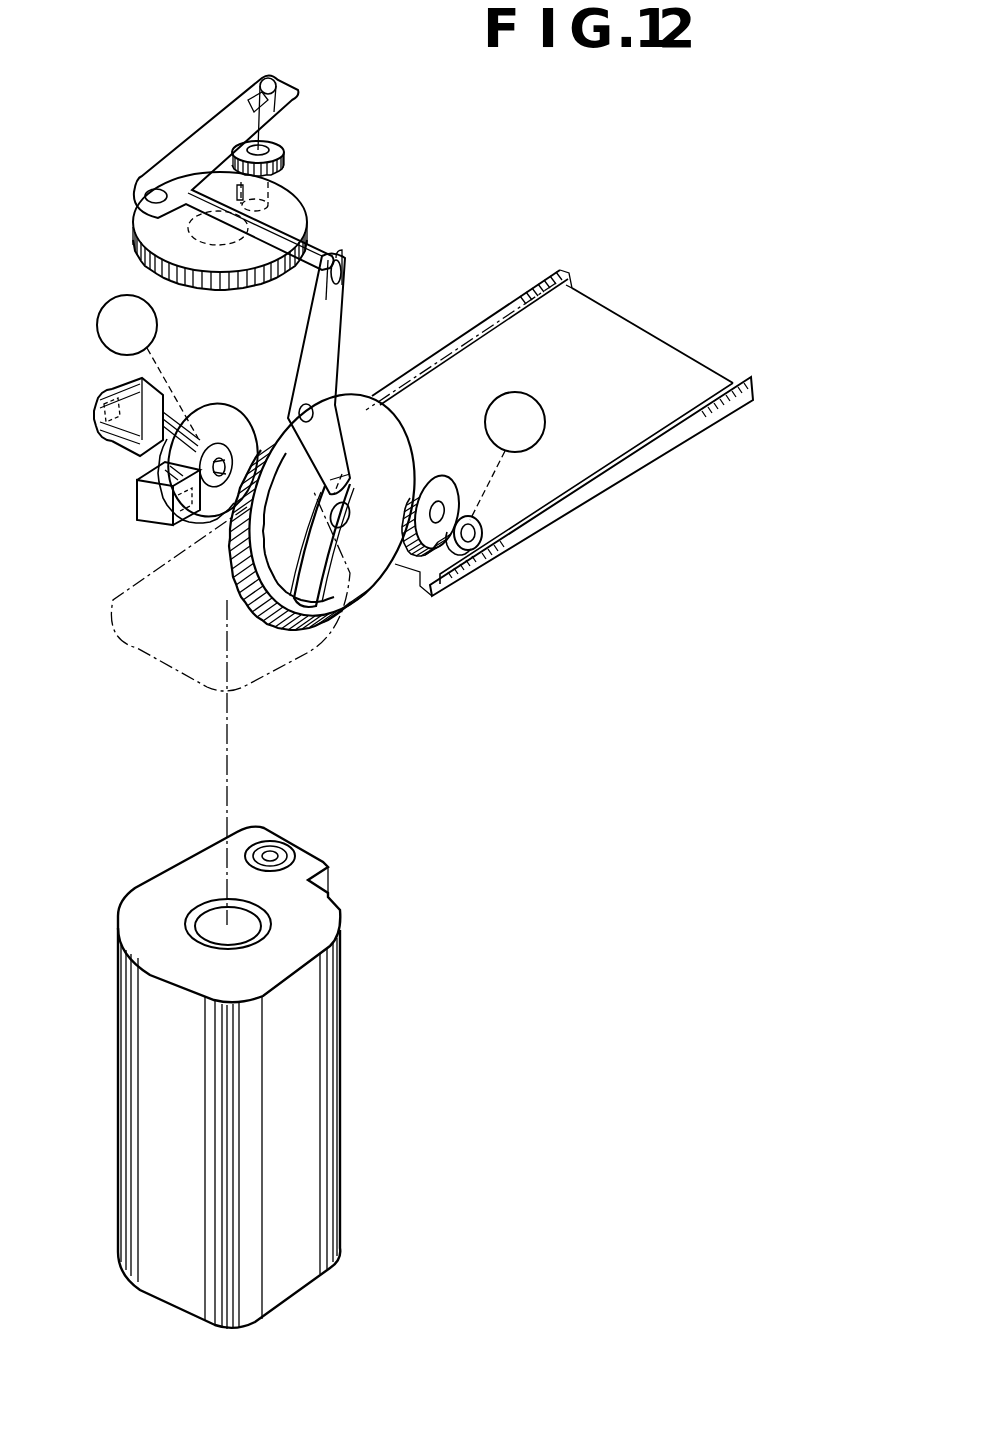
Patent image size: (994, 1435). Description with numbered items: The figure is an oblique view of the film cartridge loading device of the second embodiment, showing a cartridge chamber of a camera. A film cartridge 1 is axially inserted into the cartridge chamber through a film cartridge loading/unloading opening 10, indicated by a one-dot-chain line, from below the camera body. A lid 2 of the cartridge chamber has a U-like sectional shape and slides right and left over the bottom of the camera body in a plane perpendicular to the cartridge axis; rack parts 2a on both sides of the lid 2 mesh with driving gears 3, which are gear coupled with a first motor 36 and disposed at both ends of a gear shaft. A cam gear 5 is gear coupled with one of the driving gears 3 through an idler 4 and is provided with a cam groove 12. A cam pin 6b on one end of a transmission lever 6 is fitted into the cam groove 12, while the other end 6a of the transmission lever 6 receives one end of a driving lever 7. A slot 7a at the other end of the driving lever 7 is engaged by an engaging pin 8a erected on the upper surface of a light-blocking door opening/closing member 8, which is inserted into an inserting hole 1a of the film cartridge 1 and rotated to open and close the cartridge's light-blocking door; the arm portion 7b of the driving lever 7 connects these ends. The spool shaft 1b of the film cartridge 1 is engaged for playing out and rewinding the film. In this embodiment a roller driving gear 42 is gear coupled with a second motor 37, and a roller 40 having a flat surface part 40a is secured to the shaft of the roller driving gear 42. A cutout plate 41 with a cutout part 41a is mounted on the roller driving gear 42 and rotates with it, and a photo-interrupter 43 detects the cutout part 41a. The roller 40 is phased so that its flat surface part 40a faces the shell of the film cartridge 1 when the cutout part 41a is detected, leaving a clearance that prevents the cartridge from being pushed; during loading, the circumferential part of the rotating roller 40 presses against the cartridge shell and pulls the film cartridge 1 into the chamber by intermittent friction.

The film cartridge 1 is at (318, 1084).
The inserting hole 1a is at (272, 856).
The spool shaft 1b is at (215, 918).
The lid 2 is at (626, 322).
The rack parts 2a is at (500, 532).
The driving gears 3 is at (466, 550).
The idler 4 is at (450, 478).
The cam gear 5 is at (396, 414).
The transmission lever 6 is at (325, 312).
The one end of transmission lever 6a is at (346, 272).
The cam pin 6b is at (346, 470).
The driving lever 7 is at (208, 136).
The slot 7a is at (300, 96).
The arm portion 7b is at (306, 244).
The light-blocking door opening/closing member 8 is at (284, 146).
The engaging pin 8a is at (266, 80).
The film cartridge loading/unloading opening 10 is at (118, 660).
The cam groove 12 is at (322, 548).
The first motor 36 is at (530, 394).
The second motor 37 is at (98, 326).
The roller 40 is at (98, 422).
The flat surface part 40a is at (158, 398).
The cutout plate 41 is at (240, 426).
The cutout part 41a is at (172, 510).
The roller driving gear 42 is at (206, 452).
The photo-interrupter 43 is at (140, 495).